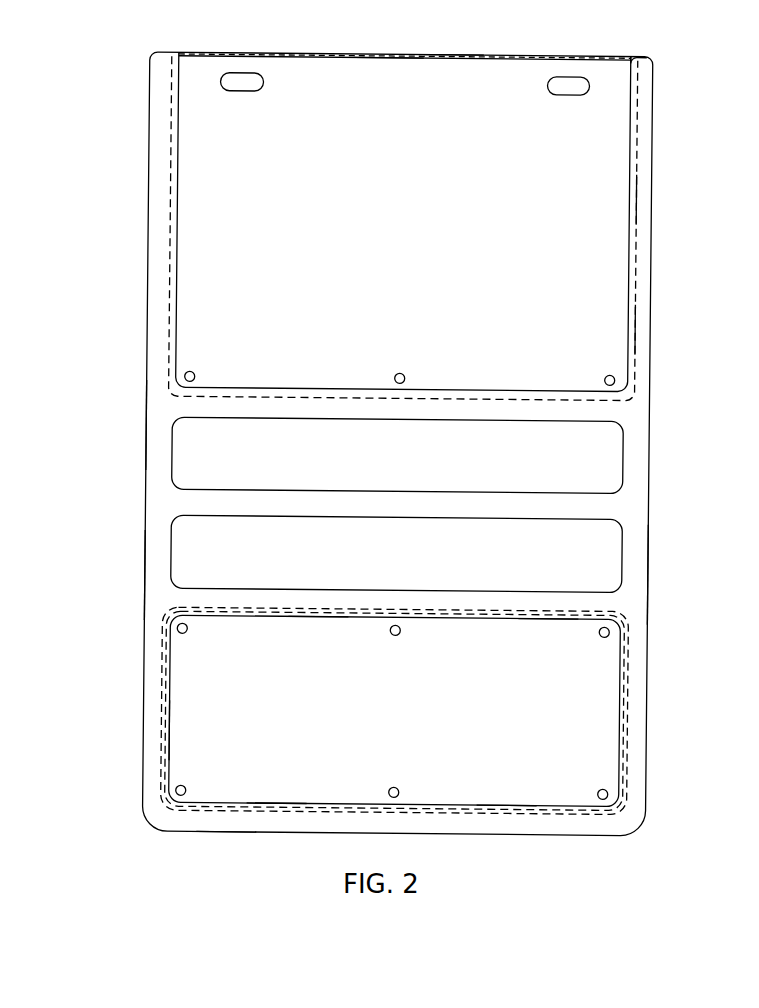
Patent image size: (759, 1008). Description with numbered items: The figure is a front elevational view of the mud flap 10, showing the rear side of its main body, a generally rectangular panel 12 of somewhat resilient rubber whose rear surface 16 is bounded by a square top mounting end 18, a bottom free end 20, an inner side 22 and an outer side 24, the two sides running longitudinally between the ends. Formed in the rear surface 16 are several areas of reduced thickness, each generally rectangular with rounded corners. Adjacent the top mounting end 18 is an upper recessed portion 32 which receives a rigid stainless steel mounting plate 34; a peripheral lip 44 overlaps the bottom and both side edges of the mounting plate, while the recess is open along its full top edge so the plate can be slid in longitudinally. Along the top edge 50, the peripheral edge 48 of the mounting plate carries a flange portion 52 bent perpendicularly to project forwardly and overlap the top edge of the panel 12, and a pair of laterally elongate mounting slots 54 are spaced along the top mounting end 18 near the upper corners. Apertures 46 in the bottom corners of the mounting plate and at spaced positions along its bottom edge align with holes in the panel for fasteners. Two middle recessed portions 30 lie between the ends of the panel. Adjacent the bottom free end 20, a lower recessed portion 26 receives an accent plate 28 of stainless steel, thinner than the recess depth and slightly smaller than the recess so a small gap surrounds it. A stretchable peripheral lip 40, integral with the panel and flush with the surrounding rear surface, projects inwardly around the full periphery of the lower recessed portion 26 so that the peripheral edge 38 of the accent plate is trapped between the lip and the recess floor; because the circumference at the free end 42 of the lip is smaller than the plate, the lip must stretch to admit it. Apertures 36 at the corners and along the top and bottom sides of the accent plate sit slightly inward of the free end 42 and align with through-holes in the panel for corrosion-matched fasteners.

The mud flap 10 is at (55, 318).
The panel 12 is at (157, 470).
The rear surface 16 is at (158, 434).
The top mounting end 18 is at (644, 58).
The bottom free end 20 is at (225, 831).
The inner side 22 is at (650, 578).
The outer side 24 is at (143, 560).
The lower recessed portion 26 is at (200, 692).
The accent plate 28 is at (188, 738).
The middle recessed portions 30 is at (612, 540).
The upper recessed portion 32 is at (602, 287).
The mounting plate 34 is at (602, 335).
The apertures 36 is at (190, 627).
The peripheral edge 38 is at (487, 620).
The peripheral lip 40 is at (553, 617).
The free end 42 is at (315, 615).
The peripheral lip 44 is at (177, 243).
The apertures 46 is at (194, 372).
The peripheral edge 48 is at (633, 193).
The top edge 50 is at (386, 58).
The flange portion 52 is at (440, 57).
The mounting slots 54 is at (238, 90).